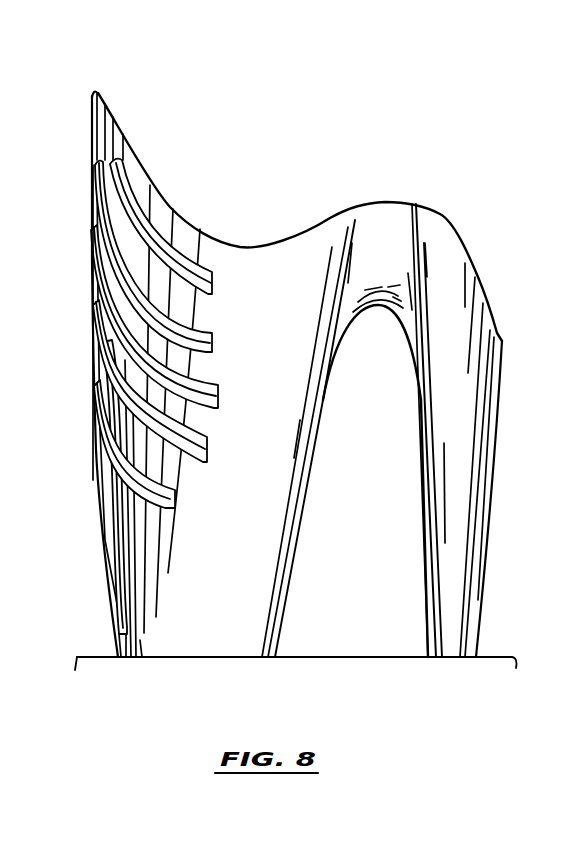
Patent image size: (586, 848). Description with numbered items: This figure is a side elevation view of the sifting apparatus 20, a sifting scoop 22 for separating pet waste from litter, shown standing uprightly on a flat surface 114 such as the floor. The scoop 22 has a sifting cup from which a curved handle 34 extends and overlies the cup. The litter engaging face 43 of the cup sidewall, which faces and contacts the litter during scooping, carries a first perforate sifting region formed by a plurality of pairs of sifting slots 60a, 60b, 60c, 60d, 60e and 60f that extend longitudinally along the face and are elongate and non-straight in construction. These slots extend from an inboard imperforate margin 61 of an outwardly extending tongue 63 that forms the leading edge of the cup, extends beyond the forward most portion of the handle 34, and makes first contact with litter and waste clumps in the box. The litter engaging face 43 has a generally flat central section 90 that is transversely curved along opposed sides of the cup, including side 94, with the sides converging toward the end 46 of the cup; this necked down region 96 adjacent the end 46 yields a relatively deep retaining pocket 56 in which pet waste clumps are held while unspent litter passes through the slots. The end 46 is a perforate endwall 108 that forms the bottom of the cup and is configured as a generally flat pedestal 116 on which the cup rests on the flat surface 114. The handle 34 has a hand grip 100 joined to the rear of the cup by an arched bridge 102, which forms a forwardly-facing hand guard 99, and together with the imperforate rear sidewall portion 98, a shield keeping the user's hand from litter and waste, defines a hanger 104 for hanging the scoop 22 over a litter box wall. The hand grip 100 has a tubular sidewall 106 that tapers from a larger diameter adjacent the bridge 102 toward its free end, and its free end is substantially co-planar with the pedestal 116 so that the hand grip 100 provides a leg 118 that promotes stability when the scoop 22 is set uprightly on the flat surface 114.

The sifting apparatus 20 is at (394, 189).
The sifting scoop 22 is at (150, 90).
The handle 34 is at (482, 268).
The litter engaging face 43 is at (86, 524).
The end of the cup 46 is at (247, 660).
The retaining pocket 56 is at (239, 221).
The inboard imperforate margin 61 is at (90, 113).
The tongue 63 is at (99, 90).
The sifting slot 60a is at (129, 606).
The sifting slot 60b is at (174, 495).
The sifting slot 60c is at (208, 450).
The sifting slot 60d is at (219, 395).
The sifting slot 60e is at (213, 342).
The sifting slot 60f is at (215, 280).
The central section 90 is at (80, 389).
The side of the sifting cup 94 is at (280, 509).
The necked down region 96 is at (262, 566).
The imperforate rear sidewall portion 98 is at (316, 451).
The hand guard 99 is at (352, 177).
The hand grip 100 is at (498, 393).
The bridge 102 is at (378, 312).
The hanger 104 is at (388, 506).
The tubular sidewall 106 is at (494, 448).
The perforate endwall 108 is at (152, 658).
The flat surface 114 is at (88, 656).
The pedestal 116 is at (199, 660).
The leg 118 is at (482, 568).